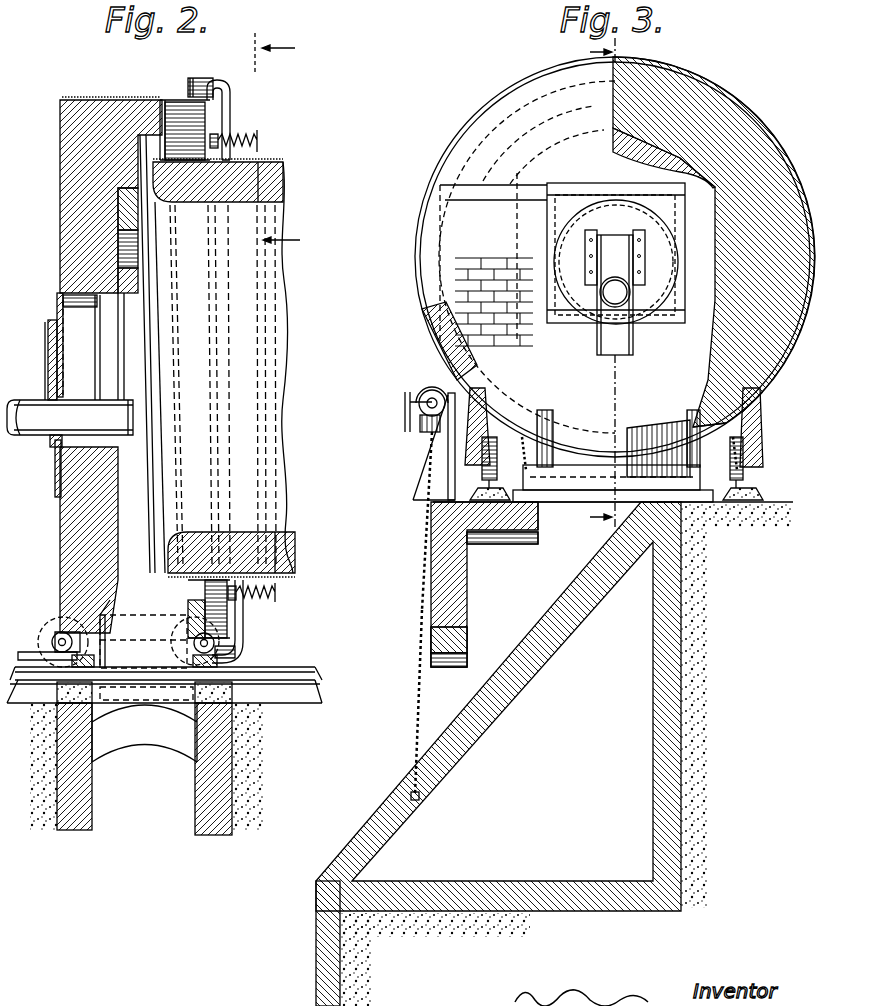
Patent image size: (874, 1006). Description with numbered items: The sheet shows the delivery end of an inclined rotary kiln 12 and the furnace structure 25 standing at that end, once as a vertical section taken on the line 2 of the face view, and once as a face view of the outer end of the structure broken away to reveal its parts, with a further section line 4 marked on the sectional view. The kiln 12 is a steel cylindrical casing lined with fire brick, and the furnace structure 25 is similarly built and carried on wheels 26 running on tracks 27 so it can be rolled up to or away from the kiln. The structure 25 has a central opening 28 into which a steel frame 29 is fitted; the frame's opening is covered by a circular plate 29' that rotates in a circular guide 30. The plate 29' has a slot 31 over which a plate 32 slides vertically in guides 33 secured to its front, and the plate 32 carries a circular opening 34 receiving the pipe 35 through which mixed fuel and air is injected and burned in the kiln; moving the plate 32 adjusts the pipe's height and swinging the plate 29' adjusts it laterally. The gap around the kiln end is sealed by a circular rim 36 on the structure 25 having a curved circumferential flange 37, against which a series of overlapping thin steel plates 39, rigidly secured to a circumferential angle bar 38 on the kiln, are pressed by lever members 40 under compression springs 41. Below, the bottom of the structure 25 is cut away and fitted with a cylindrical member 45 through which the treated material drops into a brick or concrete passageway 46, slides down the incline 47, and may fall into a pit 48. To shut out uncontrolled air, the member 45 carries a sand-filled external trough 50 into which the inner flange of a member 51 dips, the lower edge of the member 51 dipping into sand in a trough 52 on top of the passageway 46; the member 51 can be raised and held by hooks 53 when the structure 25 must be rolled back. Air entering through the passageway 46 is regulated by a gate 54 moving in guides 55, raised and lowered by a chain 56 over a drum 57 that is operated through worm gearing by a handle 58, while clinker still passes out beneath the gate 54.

In FIG. 3, the section line 2— 2 is at (614, 282).
In FIG. 2, the section line 4— 4 is at (286, 139).
In FIG. 2, the inclined rotary kiln 12 is at (284, 182).
In FIG. 2, the furnace structure 25 is at (62, 158).
In FIG. 3, the furnace structure 25 is at (683, 80).
In FIG. 2, the wheels 26 is at (52, 642).
In FIG. 3, the wheels 26 is at (483, 455).
In FIG. 2, the tracks 27 is at (40, 666).
In FIG. 3, the tracks 27 is at (500, 480).
In FIG. 2, the central opening 28 is at (75, 322).
In FIG. 2, the steel frame 29 is at (88, 354).
In FIG. 3, the steel frame 29 is at (616, 244).
In FIG. 2, the circular plate 29' is at (69, 346).
In FIG. 3, the circular plate 29' is at (595, 257).
In FIG. 2, the circular guide 30 is at (62, 292).
In FIG. 3, the circular guide 30 is at (557, 217).
In FIG. 2, the slot 31 is at (60, 378).
In FIG. 2, the vertically sliding plate 32 is at (60, 360).
In FIG. 3, the vertically sliding plate 32 is at (628, 355).
In FIG. 2, the guides 33 is at (47, 378).
In FIG. 3, the guides 33 is at (640, 230).
In FIG. 2, the circular opening 34 is at (55, 447).
In FIG. 3, the circular opening 34 is at (618, 310).
In FIG. 2, the pipe 35 is at (28, 436).
In FIG. 2, the circular rim 36 is at (170, 100).
In FIG. 2, the curved circumferential flange 37 is at (203, 78).
In FIG. 2, the circumferential angle bar 38 is at (178, 170).
In FIG. 2, the thin steel plates 39 is at (232, 92).
In FIG. 2, the lever members 40 is at (231, 113).
In FIG. 2, the compression springs 41 is at (262, 135).
In FIG. 2, the cylindrical member 45 is at (143, 634).
In FIG. 3, the cylindrical member 45 is at (645, 435).
In FIG. 2, the passageway 46 is at (147, 769).
In FIG. 3, the passageway 46 is at (498, 603).
In FIG. 3, the incline 47 is at (494, 680).
In FIG. 3, the pit 48 is at (435, 889).
In FIG. 2, the external trough 50 is at (102, 678).
In FIG. 2, the sealing member 51 is at (212, 668).
In FIG. 3, the sealing member 51 is at (555, 482).
In FIG. 2, the trough 52 is at (57, 692).
In FIG. 3, the trough 52 is at (554, 506).
In FIG. 3, the hooks 53 is at (616, 468).
In FIG. 3, the gate 54 is at (422, 594).
In FIG. 3, the guides 55 is at (413, 738).
In FIG. 3, the chain 56 is at (432, 437).
In FIG. 3, the drum 57 is at (432, 390).
In FIG. 3, the handle 58 is at (405, 410).